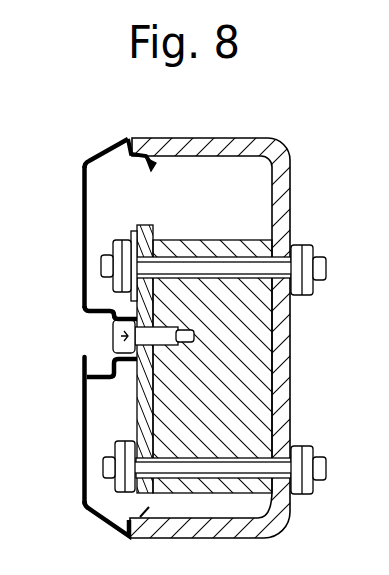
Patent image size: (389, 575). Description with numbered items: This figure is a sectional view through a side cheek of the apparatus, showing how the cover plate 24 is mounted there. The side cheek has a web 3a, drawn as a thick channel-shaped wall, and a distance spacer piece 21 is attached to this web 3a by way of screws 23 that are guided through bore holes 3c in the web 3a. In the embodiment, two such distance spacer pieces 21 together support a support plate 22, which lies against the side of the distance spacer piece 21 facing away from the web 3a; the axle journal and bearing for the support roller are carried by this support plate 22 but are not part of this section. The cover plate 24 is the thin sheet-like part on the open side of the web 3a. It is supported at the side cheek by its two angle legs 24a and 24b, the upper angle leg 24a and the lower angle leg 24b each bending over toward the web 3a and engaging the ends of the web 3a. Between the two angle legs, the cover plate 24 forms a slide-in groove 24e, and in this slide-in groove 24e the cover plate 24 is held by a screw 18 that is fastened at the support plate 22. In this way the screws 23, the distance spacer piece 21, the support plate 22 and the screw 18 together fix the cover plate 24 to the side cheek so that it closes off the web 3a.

The web 3a is at (290, 196).
The bore holes 3c is at (291, 245).
The screw 18 is at (115, 337).
The distance spacer piece 21 is at (258, 330).
The support plate 22 is at (146, 393).
The screws 23 is at (300, 288).
The cover plate 24 is at (83, 438).
The angle leg 24a is at (148, 165).
The angle leg 24b is at (83, 505).
The slide-in groove 24e is at (90, 313).